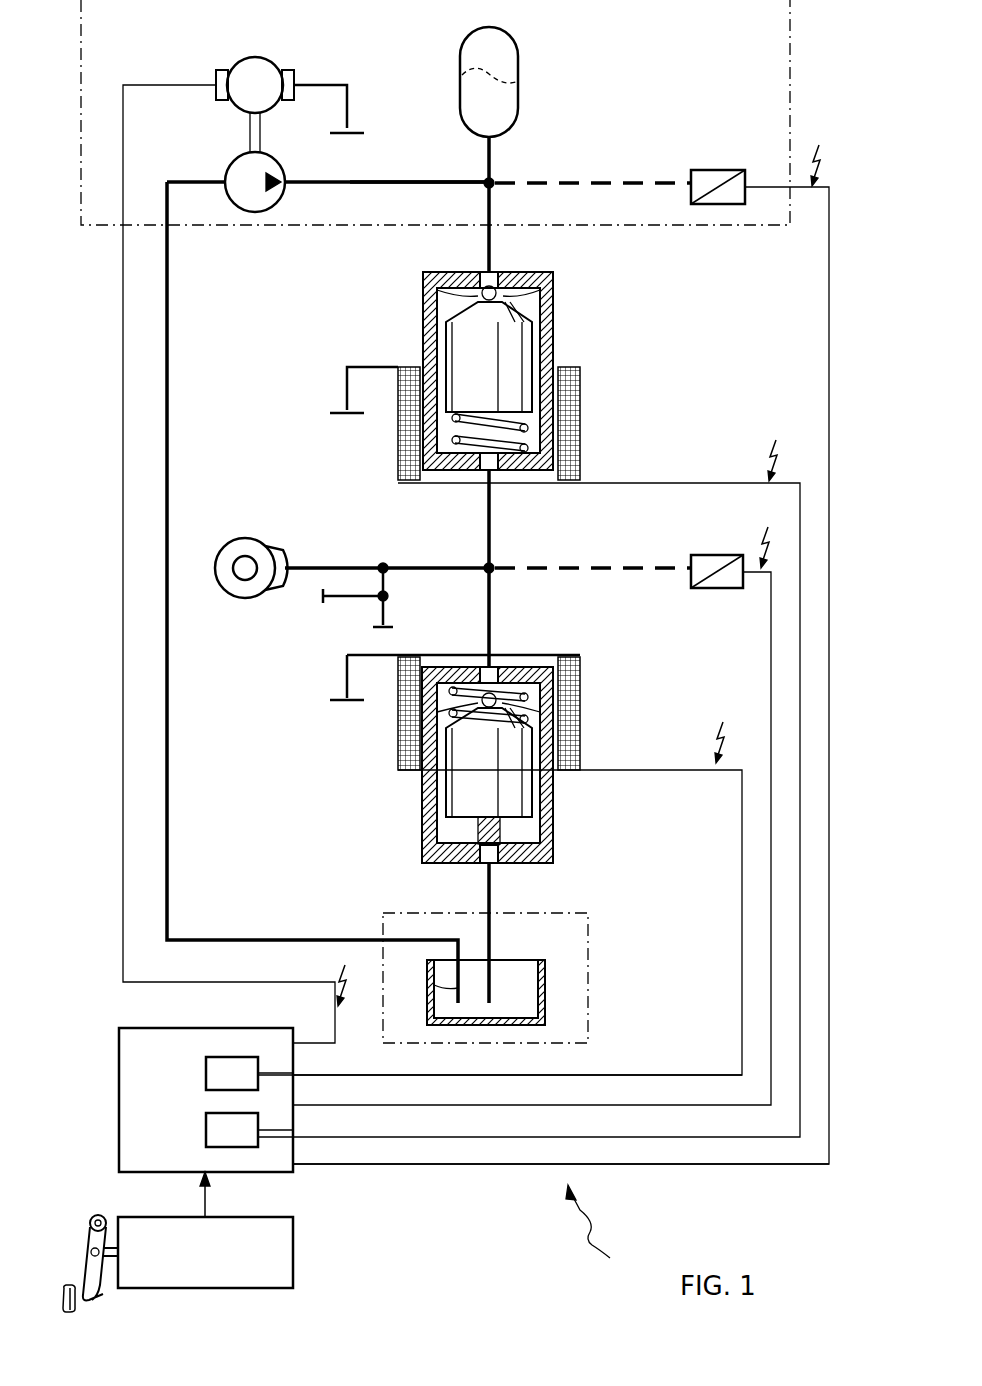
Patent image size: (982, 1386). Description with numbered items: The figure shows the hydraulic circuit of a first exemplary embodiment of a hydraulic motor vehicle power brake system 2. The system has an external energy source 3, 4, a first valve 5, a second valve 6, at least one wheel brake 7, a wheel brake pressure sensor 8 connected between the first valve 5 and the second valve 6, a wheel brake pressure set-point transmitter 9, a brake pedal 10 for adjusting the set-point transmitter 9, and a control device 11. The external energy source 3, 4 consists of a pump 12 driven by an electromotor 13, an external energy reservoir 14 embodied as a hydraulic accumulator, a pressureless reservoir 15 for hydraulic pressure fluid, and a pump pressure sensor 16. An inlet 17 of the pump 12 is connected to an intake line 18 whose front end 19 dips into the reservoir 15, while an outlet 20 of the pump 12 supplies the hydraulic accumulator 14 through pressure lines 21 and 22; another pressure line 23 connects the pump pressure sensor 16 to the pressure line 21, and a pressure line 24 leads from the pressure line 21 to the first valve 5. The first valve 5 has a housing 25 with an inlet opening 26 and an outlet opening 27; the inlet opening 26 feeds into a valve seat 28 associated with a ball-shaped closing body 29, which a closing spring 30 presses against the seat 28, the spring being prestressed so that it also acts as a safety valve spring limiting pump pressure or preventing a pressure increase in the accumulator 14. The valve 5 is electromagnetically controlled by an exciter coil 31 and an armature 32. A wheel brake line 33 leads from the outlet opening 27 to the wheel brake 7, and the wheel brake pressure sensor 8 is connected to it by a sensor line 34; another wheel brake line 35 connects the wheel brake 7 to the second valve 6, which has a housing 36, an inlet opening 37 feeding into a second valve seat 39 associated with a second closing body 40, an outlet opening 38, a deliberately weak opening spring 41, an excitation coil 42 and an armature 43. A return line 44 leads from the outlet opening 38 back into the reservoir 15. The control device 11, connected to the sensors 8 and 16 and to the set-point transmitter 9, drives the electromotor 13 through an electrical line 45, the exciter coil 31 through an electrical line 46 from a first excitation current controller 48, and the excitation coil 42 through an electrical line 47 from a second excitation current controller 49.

The hydraulic motor vehicle power brake system 2 is at (594, 1229).
The external energy source 3 is at (790, 33).
The external energy source 4 is at (588, 925).
The first valve 5 is at (529, 683).
The second valve 6 is at (500, 865).
The wheel brake 7 is at (280, 548).
The wheel brake pressure sensor 8 is at (714, 558).
The wheel brake pressure set-point transmitter 9 is at (292, 1260).
The brake pedal 10 is at (62, 1292).
The control device 11 is at (119, 1101).
The pump 12 is at (262, 212).
The electromotor 13 is at (255, 58).
The external energy reservoir 14 is at (518, 62).
The pressureless reservoir 15 is at (545, 997).
The pump pressure sensor 16 is at (718, 170).
The inlet 17 is at (228, 170).
The intake line 18 is at (175, 405).
The front end 19 is at (434, 990).
The outlet 20 is at (287, 180).
The pressure line 21 is at (405, 178).
The pressure line 22 is at (491, 158).
The pressure line 23 is at (620, 180).
The pressure line 24 is at (487, 241).
The housing 25 is at (555, 345).
The inlet opening 26 is at (500, 275).
The outlet opening 27 is at (497, 472).
The valve seat 28 is at (481, 296).
The closing body 29 is at (505, 293).
The closing spring 30 is at (450, 440).
The exciter coil 31 is at (570, 450).
The armature 32 is at (460, 356).
The wheel brake line 33 is at (487, 518).
The sensor line 34 is at (630, 565).
The wheel brake line 35 is at (487, 603).
The housing 36 is at (550, 832).
The inlet opening 37 is at (498, 675).
The outlet opening 38 is at (498, 865).
The second valve seat 39 is at (462, 702).
The second closing body 40 is at (532, 706).
The opening spring 41 is at (478, 708).
The excitation coil 42 is at (570, 745).
The armature 43 is at (458, 797).
The return line 44 is at (487, 895).
The electrical line 45 is at (282, 982).
The electrical line 46 is at (493, 1165).
The electrical line 47 is at (685, 1075).
The first excitation current controller 48 is at (206, 1132).
The second excitation current controller 49 is at (206, 1076).